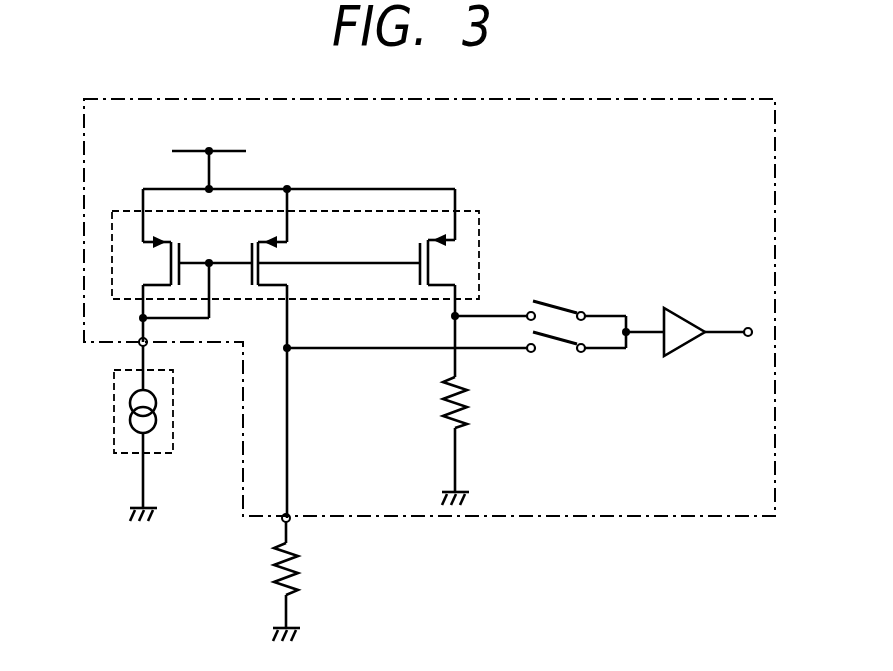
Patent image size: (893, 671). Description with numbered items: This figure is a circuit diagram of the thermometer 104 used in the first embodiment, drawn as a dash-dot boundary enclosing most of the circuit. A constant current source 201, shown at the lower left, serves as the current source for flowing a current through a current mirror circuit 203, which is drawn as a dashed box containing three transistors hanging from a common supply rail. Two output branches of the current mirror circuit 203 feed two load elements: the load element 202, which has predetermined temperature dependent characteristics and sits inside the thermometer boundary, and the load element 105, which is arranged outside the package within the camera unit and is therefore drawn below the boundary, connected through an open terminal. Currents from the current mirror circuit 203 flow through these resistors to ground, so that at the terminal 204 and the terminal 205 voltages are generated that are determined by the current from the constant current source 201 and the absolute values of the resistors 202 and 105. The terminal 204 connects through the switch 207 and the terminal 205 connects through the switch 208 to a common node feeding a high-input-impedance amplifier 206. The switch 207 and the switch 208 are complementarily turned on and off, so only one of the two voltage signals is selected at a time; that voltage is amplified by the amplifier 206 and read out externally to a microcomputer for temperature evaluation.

The thermometer 104 is at (718, 96).
The load element 105 is at (298, 578).
The constant current source 201 is at (113, 400).
The load element 202 is at (468, 413).
The current mirror circuit 203 is at (479, 227).
The terminal 204 is at (452, 316).
The terminal 205 is at (288, 352).
The high-input-impedance amplifier 206 is at (684, 307).
The switch 207 is at (557, 299).
The switch 208 is at (558, 355).